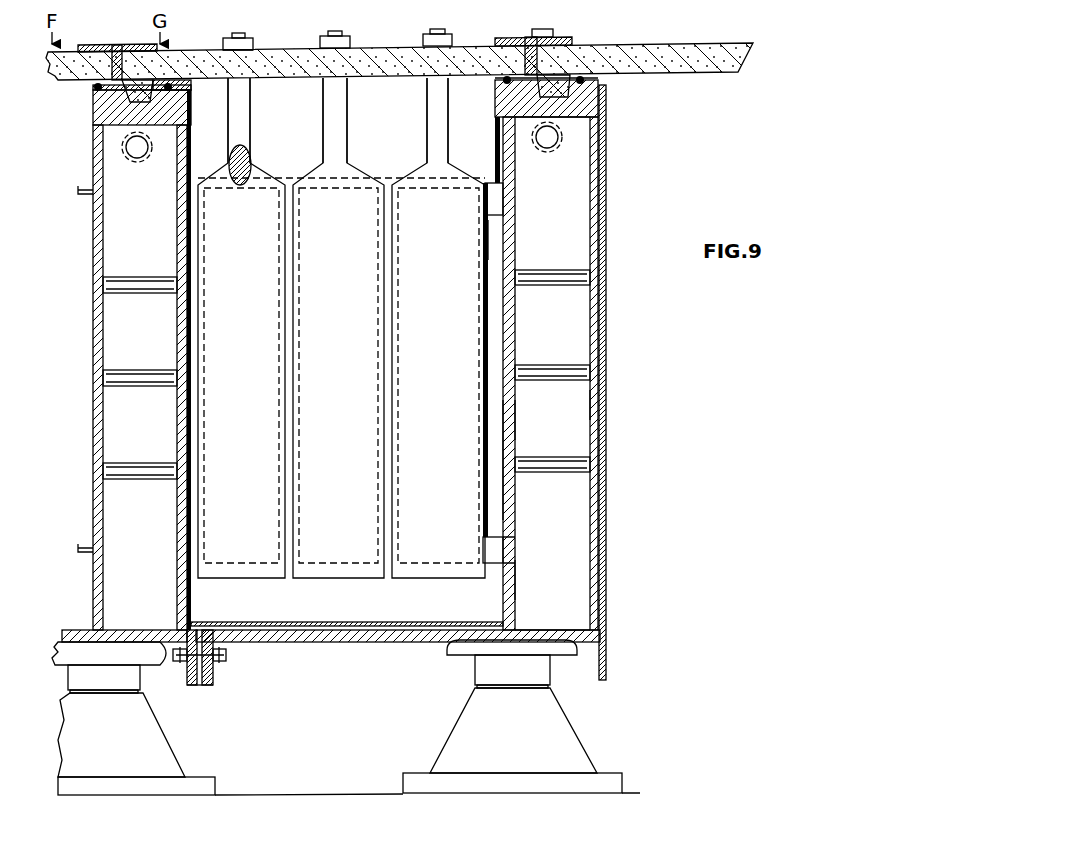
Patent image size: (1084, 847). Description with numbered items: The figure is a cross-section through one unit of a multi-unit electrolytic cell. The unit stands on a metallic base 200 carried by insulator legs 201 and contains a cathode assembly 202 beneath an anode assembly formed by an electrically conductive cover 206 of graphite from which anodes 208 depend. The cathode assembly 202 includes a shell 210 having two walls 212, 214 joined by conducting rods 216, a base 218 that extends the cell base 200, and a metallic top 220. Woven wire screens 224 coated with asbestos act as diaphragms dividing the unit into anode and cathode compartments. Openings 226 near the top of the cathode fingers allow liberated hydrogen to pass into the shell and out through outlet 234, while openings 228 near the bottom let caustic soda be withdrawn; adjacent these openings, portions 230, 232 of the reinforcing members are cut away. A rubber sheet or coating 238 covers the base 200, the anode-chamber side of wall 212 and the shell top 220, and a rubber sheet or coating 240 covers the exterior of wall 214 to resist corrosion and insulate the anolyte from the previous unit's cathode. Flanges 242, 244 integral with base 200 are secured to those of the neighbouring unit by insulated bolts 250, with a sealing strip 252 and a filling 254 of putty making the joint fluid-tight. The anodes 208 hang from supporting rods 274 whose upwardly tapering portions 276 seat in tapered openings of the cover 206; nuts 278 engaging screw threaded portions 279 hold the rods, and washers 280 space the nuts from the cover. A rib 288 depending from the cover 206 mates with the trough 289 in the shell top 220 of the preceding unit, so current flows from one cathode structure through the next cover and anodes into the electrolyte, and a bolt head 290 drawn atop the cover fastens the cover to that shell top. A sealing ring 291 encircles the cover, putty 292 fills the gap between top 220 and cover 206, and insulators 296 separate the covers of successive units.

The metallic base 200 is at (338, 643).
The insulator legs 201 is at (100, 675).
The cathode assembly 202 is at (508, 500).
The electrically conductive cover 206 is at (375, 48).
The anodes 208 is at (289, 180).
The shell 210 is at (547, 580).
The wall 212 is at (508, 416).
The wall 214 is at (590, 405).
The conducting rods 216 is at (565, 458).
The base 218 is at (562, 625).
The metallic top 220 is at (570, 120).
The woven wire screens 224 is at (486, 195).
The openings 226 is at (103, 211).
The openings 228 is at (512, 550).
The cut-away portion 230 is at (483, 237).
The cut-away portion 232 is at (95, 548).
The outlet 234 is at (548, 150).
The sheet or coating 238 is at (497, 139).
The sheet or coating 240 is at (600, 254).
The flange 242 is at (213, 682).
The flange 244 is at (606, 655).
The bolts 250 is at (226, 655).
The sealing strip 252 is at (196, 688).
The filling 254 is at (195, 628).
The supporting rods 274 is at (348, 140).
The upwardly tapering portions 276 is at (205, 50).
The nuts 278 is at (252, 40).
The externally screw threaded portions 279 is at (243, 30).
The washers 280 is at (255, 47).
The rib 288 is at (150, 103).
The trough 289 is at (165, 97).
The bolt head 290 is at (553, 32).
The sealing ring 291 is at (580, 78).
The putty 292 is at (532, 40).
The insulators 296 is at (495, 42).